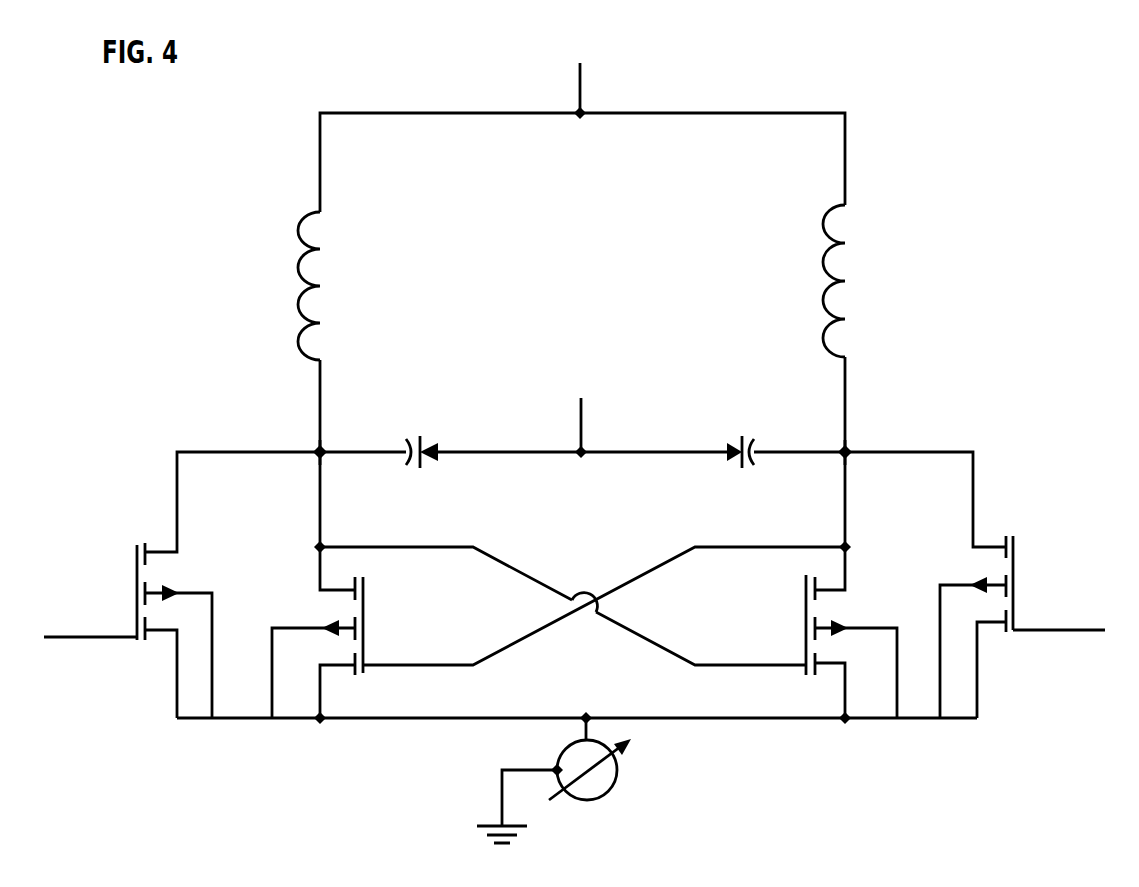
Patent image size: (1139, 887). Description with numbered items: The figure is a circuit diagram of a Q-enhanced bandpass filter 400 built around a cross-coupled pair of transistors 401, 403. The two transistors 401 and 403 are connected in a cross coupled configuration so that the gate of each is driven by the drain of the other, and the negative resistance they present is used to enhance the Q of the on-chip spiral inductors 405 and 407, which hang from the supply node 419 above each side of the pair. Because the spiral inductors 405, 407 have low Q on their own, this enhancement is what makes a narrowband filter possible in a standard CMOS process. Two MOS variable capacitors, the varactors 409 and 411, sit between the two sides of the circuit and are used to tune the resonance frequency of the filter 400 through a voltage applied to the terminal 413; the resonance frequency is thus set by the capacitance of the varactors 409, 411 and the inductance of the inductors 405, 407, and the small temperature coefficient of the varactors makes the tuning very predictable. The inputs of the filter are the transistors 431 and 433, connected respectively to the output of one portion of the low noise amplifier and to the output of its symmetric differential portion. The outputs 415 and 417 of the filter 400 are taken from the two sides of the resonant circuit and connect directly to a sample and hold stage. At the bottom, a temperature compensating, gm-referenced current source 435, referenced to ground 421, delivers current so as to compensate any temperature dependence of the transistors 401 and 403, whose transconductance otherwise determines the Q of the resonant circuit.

The Q-enhanced bandpass filter 400 is at (1026, 131).
The transistor 401 is at (366, 600).
The transistor 403 is at (800, 610).
The spiral inductor 405 is at (301, 342).
The spiral inductor 407 is at (820, 301).
The MOS variable capacitor (varactor) 409 is at (438, 440).
The MOS variable capacitor (varactor) 411 is at (731, 432).
The terminal 413 is at (583, 431).
The output 415 is at (318, 463).
The output 417 is at (850, 449).
The supply voltage node VDD 419 is at (580, 91).
The ground 421 is at (499, 789).
The input transistor 431 is at (136, 557).
The input transistor 433 is at (1018, 565).
The temperature compensating current source 435 is at (615, 783).